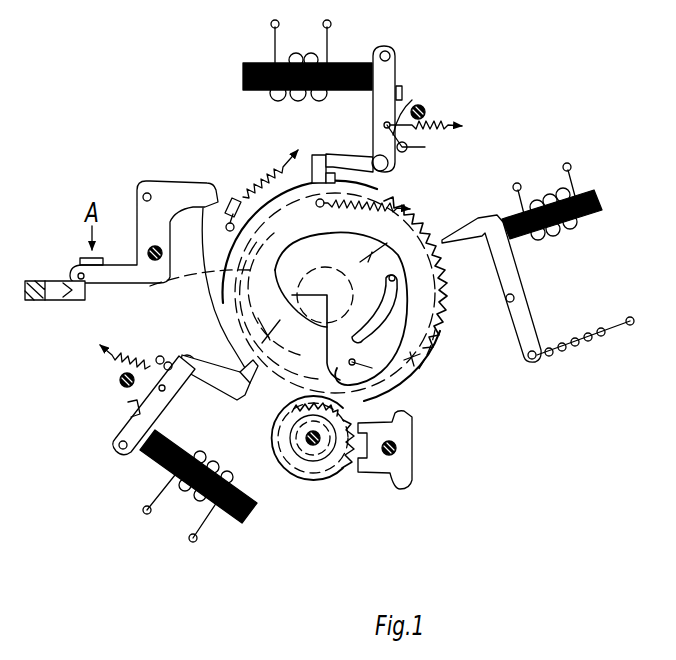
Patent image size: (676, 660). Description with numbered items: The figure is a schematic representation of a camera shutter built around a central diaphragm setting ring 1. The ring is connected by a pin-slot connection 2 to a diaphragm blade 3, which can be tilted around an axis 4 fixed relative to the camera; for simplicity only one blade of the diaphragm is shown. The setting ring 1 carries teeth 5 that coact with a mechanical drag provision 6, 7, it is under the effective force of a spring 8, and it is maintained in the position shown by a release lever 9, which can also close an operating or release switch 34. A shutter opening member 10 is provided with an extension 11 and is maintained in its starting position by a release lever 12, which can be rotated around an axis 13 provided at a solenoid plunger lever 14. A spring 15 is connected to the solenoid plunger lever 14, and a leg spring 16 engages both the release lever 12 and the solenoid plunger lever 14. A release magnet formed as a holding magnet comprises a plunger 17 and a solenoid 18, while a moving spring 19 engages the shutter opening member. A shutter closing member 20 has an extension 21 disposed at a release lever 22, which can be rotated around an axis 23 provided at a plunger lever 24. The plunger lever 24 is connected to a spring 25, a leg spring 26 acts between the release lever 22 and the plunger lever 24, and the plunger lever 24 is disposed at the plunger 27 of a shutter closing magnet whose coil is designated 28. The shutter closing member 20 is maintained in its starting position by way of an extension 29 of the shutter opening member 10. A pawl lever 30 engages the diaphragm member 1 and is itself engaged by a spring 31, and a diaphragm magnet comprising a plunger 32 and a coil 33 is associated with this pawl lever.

The diaphragm setting ring 1 is at (412, 362).
The pin-slot connection 2 is at (400, 278).
The diaphragm blade 3 is at (433, 250).
The axis 4 is at (380, 372).
The teeth 5 is at (430, 345).
The mechanical drag provision 6 is at (402, 467).
The mechanical drag provision 7 is at (343, 467).
The spring 8 is at (267, 170).
The release lever 9 is at (158, 182).
The shutter opening member 10 is at (203, 293).
The extension 11 is at (320, 153).
The release lever 12 is at (357, 155).
The axis 13 is at (415, 103).
The solenoid plunger lever 14 is at (373, 103).
The spring 15 is at (443, 120).
The leg spring 16 is at (414, 150).
The plunger 17 is at (262, 63).
The solenoid 18 is at (272, 93).
The moving spring 19 is at (372, 190).
The shutter closing member 20 is at (164, 278).
The extension 21 is at (248, 393).
The release lever 22 is at (213, 383).
The axis 23 is at (190, 355).
The plunger lever 24 is at (158, 418).
The spring 25 is at (110, 355).
The leg spring 26 is at (163, 355).
The plunger 27 is at (225, 525).
The coil 28 is at (245, 498).
The extension 29 is at (274, 315).
The pawl lever 30 is at (507, 280).
The spring 31 is at (585, 345).
The plunger 32 is at (590, 197).
The coil 33 is at (535, 212).
The release switch 34 is at (95, 295).